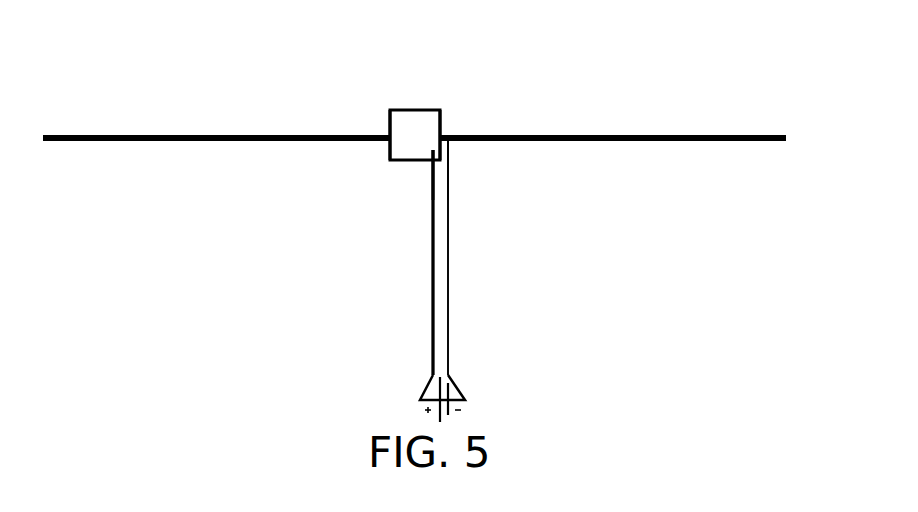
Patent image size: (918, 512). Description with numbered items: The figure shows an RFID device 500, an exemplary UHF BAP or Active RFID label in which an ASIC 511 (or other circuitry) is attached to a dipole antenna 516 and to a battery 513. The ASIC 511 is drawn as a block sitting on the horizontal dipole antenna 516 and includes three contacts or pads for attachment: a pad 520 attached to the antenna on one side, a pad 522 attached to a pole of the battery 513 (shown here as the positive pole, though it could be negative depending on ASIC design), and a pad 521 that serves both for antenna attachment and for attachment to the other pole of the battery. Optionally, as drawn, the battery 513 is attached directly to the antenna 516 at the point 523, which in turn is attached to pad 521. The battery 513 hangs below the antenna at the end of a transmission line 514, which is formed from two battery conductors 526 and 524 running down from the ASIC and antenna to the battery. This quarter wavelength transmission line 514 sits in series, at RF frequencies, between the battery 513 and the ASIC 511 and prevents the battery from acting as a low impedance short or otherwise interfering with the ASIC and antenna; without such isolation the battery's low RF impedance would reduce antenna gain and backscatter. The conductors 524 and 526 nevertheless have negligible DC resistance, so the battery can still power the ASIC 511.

The RFID device 500 is at (157, 326).
The ASIC 511 is at (378, 162).
The battery 513 is at (413, 383).
The transmission line 514 is at (462, 252).
The dipole antenna 516 is at (485, 124).
The pad 520 is at (390, 128).
The pad 521 is at (440, 128).
The pad 522 is at (434, 152).
The battery attachment point on antenna 523 is at (452, 141).
The battery conductor 524 is at (449, 320).
The battery conductor 526 is at (432, 320).